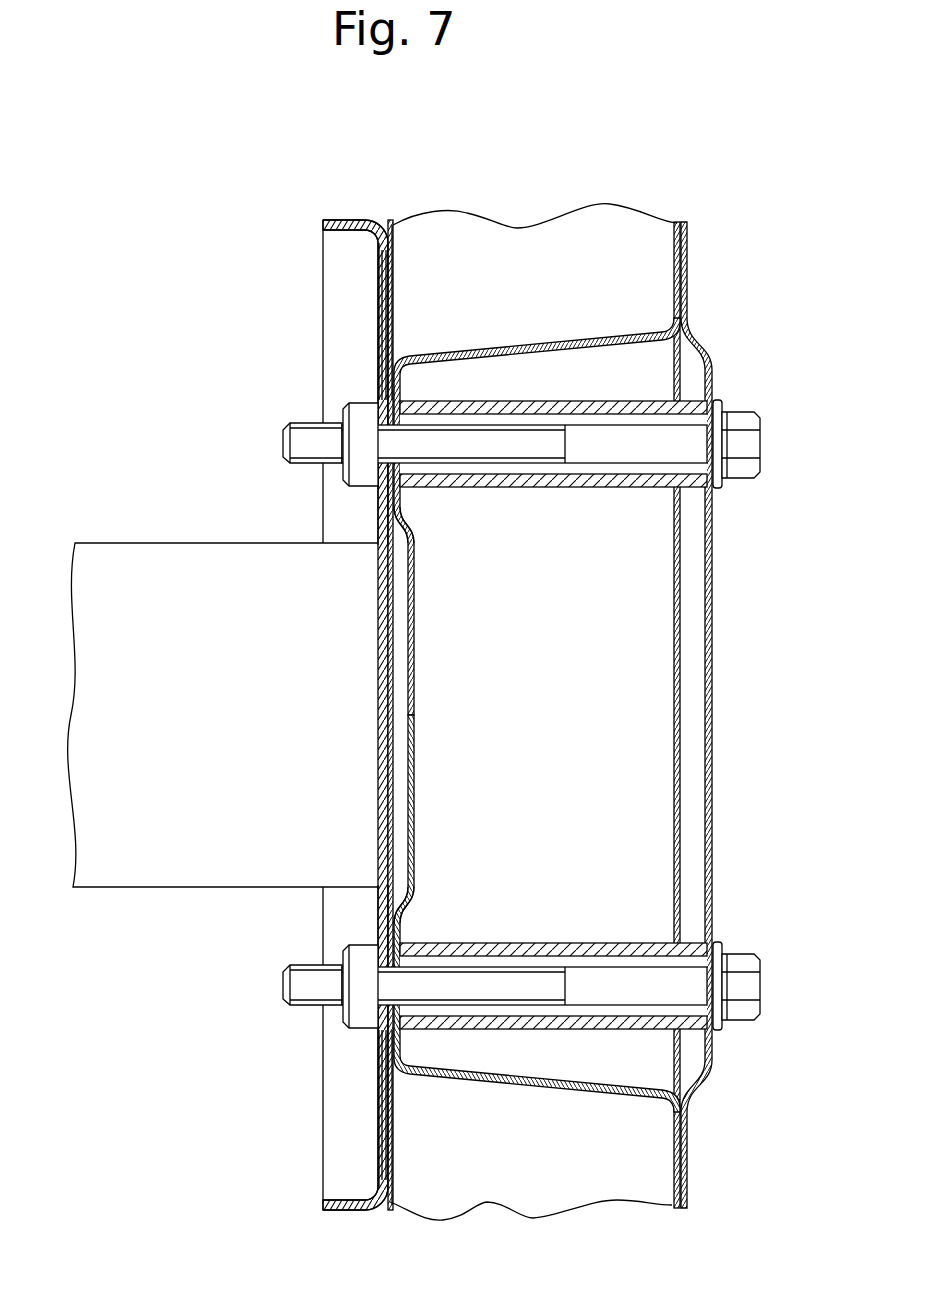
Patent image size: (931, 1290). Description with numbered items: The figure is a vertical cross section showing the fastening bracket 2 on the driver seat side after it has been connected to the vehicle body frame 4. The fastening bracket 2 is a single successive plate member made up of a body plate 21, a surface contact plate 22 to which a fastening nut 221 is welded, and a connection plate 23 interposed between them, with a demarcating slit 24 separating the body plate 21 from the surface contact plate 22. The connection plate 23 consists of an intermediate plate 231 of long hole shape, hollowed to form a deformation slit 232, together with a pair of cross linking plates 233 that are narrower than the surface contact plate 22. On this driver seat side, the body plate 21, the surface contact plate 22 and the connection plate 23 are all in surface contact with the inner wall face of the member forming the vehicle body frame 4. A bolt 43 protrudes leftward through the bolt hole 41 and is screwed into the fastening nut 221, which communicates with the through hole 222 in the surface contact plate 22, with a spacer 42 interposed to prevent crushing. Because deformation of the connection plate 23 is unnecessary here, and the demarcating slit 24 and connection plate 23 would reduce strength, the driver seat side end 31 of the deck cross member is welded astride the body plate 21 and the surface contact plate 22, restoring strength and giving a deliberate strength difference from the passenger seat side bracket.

The fastening bracket 2 is at (259, 695).
The vehicle body frame 4 is at (589, 712).
The body plate 21 is at (376, 643).
The surface contact plate 22 is at (377, 507).
The connection plate 23 is at (259, 715).
The demarcating slit 24 is at (390, 563).
The driver seat side end 31 is at (228, 723).
The bolt hole 41 is at (405, 404).
The spacer 42 is at (575, 401).
The bolt 43 is at (762, 444).
The fastening nut 221 is at (352, 477).
The through hole 222 is at (347, 414).
The intermediate plate 231 is at (378, 317).
The deformation slit 232 is at (384, 333).
The cross linking plate 233 is at (378, 298).